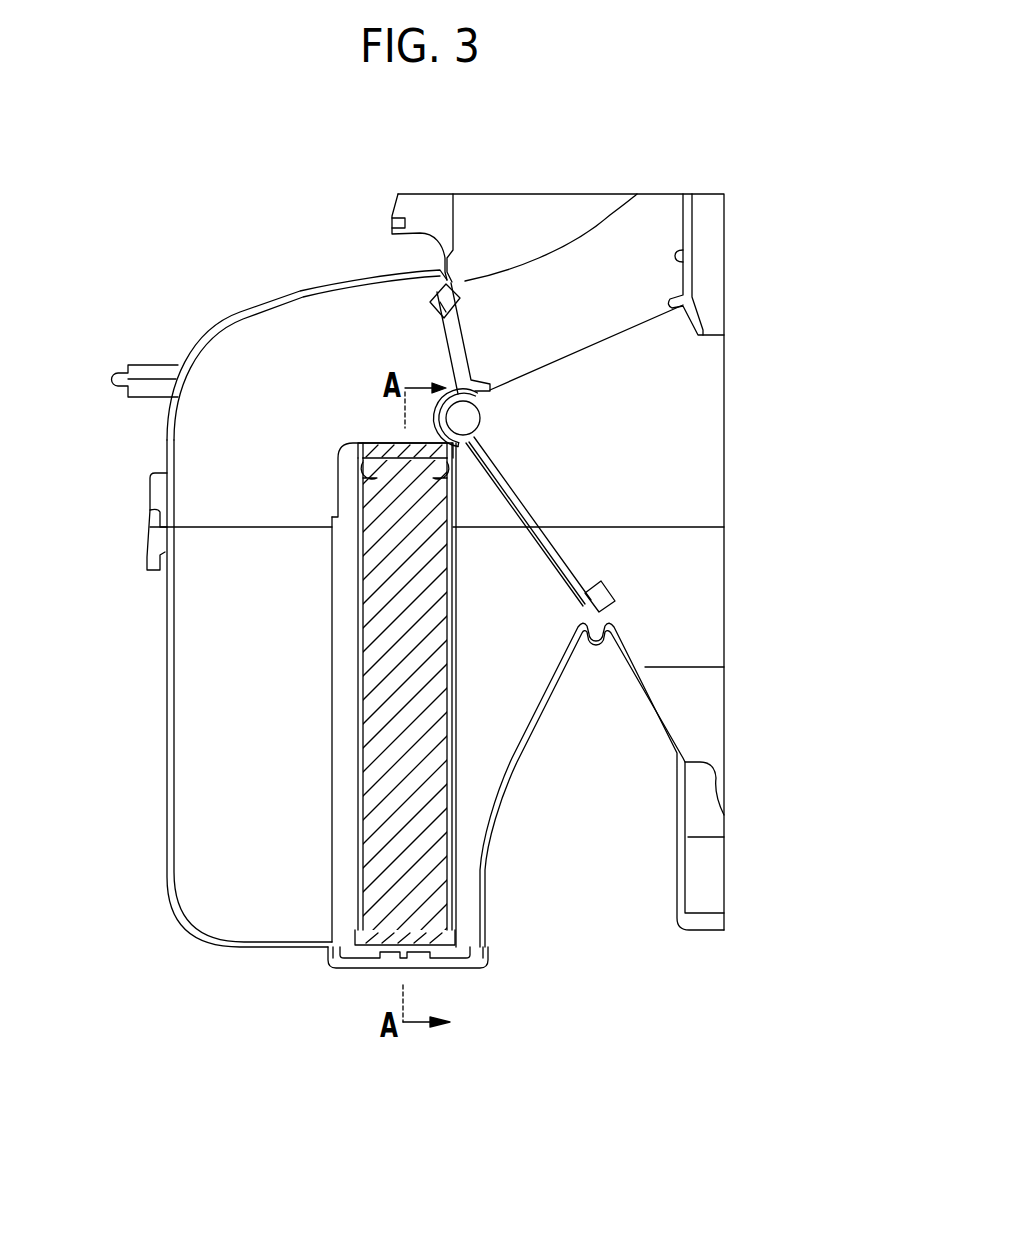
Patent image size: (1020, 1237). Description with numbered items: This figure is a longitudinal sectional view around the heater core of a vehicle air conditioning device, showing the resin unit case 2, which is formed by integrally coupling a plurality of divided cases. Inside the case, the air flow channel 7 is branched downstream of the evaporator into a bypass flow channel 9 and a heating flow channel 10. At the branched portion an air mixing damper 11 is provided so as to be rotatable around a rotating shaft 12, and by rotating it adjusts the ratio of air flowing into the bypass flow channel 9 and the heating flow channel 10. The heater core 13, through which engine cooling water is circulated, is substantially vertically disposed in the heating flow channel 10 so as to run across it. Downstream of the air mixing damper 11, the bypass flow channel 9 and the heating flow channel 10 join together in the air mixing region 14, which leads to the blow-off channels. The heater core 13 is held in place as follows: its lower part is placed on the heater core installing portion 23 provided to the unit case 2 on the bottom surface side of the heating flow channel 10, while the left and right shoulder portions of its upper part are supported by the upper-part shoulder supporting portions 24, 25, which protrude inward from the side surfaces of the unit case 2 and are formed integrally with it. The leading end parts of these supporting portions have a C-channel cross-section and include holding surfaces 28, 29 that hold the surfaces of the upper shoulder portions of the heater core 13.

The unit case 2 is at (163, 681).
The air flow channel 7 is at (710, 437).
The bypass flow channel 9 is at (652, 401).
The heating flow channel 10 is at (276, 673).
The air mixing damper 11 is at (520, 506).
The rotating shaft 12 is at (472, 417).
The heater core 13 is at (388, 768).
The air mixing region 14 is at (585, 317).
The heater core installing portion 23 is at (362, 978).
The upper-part shoulder supporting portion 24 is at (374, 408).
The upper-part shoulder supporting portion 25 is at (380, 441).
The holding surface 28 is at (358, 478).
The holding surface 29 is at (450, 480).